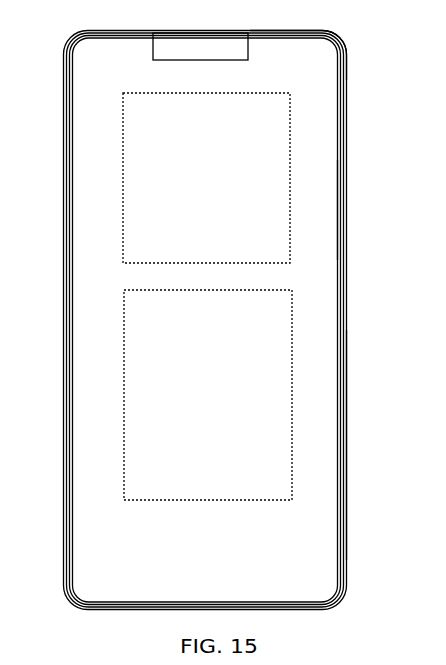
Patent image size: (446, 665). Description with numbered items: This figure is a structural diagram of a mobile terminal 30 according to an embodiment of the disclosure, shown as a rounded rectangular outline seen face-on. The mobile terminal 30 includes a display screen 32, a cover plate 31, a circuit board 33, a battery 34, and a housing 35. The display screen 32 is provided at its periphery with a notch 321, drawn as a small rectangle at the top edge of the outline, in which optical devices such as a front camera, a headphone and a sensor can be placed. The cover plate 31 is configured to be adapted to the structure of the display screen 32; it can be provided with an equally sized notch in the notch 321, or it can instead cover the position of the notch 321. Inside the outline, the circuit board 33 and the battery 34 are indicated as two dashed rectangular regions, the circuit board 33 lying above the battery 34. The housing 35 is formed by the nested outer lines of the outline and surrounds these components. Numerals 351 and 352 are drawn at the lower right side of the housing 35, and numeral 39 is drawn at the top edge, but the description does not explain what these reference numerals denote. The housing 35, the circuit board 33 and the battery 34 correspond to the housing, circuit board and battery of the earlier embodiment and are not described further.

The mobile terminal 30 is at (68, 42).
The cover plate 31 is at (342, 383).
The display screen 32 is at (336, 212).
The notch 321 is at (203, 38).
The circuit board 33 is at (290, 151).
The battery 34 is at (291, 345).
The housing 35 is at (337, 32).
The first side segment 351 is at (345, 452).
The second side segment 352 is at (346, 530).
The display screen 39 is at (281, 30).